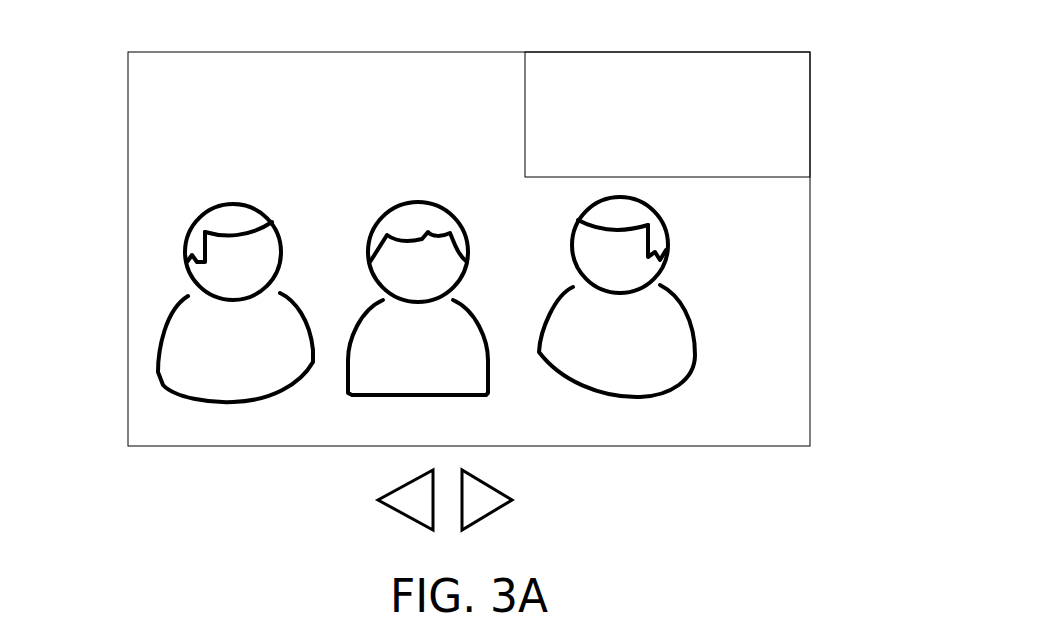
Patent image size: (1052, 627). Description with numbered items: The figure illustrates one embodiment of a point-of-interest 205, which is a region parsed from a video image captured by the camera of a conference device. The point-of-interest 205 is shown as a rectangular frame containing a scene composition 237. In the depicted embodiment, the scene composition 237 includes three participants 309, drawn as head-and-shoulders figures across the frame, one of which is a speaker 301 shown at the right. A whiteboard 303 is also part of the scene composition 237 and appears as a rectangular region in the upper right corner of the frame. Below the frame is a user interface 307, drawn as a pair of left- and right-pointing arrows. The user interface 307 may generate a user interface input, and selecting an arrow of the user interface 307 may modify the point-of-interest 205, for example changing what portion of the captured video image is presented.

The scene composition 237 is at (86, 71).
The point-of-interest 205 is at (220, 446).
The whiteboard 303 is at (738, 88).
The speaker 301 is at (688, 320).
The participants 309 is at (481, 360).
The user interface 307 is at (450, 492).